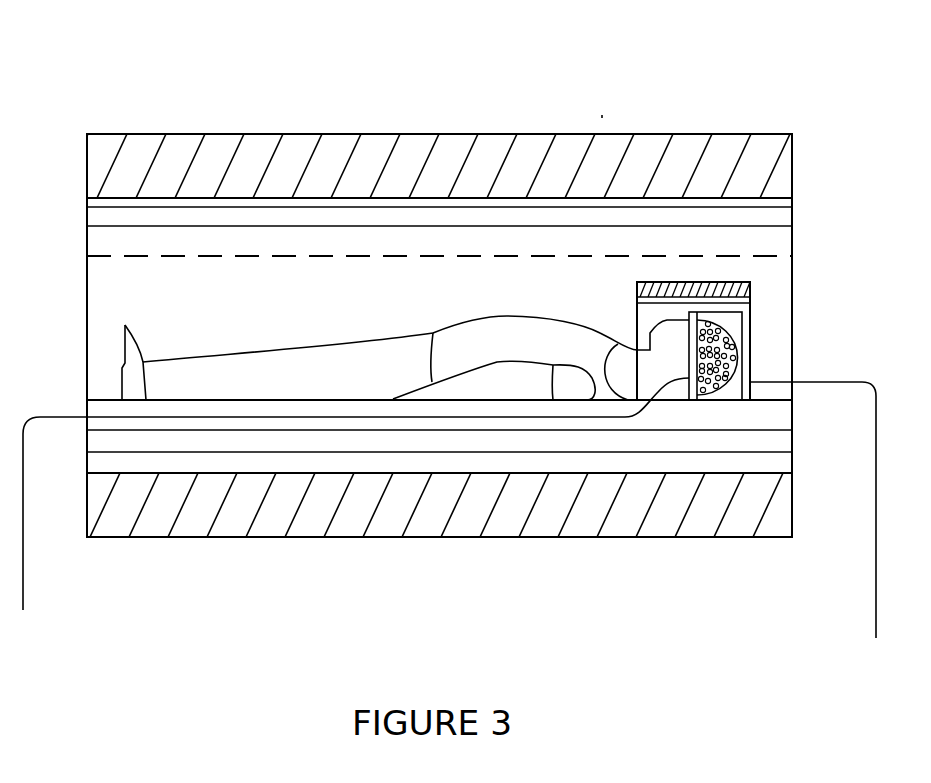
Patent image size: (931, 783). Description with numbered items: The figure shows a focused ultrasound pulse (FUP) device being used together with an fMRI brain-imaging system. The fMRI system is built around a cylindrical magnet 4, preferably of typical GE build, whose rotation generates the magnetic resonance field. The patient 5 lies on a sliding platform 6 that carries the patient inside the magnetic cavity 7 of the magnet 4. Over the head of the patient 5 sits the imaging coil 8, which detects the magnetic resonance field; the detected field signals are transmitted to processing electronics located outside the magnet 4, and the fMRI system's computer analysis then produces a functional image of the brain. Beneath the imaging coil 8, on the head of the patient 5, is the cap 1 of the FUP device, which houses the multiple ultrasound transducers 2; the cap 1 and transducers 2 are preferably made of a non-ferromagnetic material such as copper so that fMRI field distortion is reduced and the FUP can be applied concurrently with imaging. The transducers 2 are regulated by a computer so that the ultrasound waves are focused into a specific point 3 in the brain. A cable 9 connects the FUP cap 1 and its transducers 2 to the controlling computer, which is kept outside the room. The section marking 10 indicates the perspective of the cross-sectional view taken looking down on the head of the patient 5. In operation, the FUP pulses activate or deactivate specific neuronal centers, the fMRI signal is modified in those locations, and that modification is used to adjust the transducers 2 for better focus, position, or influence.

The cap 1 is at (704, 302).
The ultrasound transducers 2 is at (718, 396).
The specific point 3 is at (813, 534).
The cylindrical magnet 4 is at (792, 166).
The patient 5 is at (500, 310).
The sliding platform 6 is at (123, 430).
The magnetic cavity 7 is at (128, 254).
The imaging coil 8 is at (742, 318).
The cable 9 is at (349, 513).
The cross-sectional view reference 10 is at (602, 115).